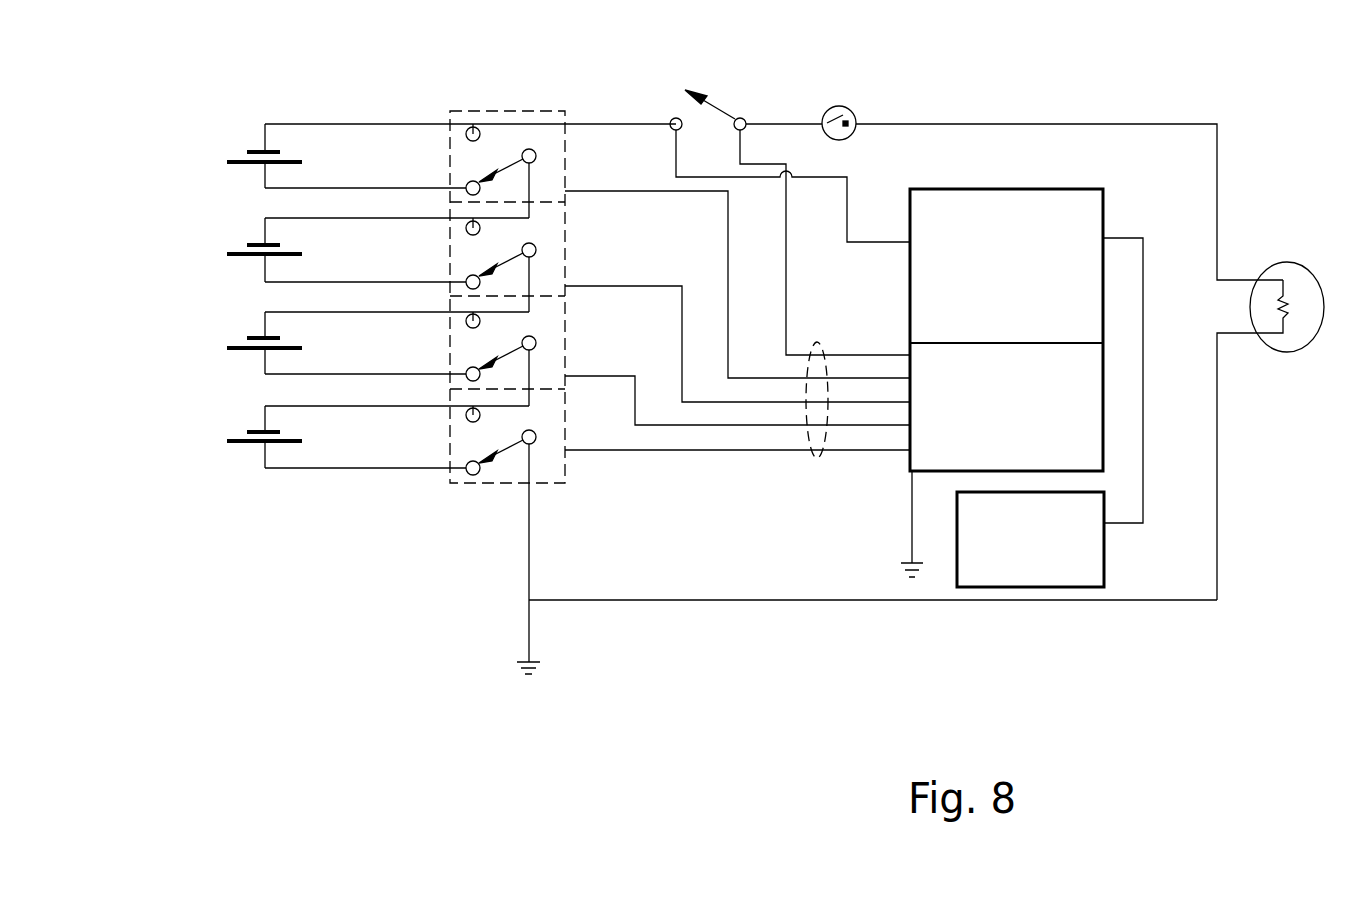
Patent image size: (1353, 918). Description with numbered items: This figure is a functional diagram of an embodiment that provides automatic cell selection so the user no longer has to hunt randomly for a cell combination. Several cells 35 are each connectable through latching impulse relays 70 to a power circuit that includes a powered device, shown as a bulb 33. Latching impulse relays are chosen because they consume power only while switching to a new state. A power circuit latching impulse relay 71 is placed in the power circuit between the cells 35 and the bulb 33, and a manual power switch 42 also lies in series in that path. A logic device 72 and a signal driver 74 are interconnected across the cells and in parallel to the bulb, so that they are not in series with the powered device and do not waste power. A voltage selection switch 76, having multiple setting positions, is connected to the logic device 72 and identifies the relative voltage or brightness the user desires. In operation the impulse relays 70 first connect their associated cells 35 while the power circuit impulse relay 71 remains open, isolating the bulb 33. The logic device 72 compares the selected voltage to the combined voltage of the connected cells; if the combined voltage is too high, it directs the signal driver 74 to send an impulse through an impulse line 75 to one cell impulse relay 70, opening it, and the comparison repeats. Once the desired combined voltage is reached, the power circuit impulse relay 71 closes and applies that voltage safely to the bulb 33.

The bulb 33 is at (1284, 262).
The cells 35 is at (227, 440).
The manual power switch 42 is at (839, 106).
The latching impulse relays 70 is at (512, 108).
The power circuit latching impulse relay 71 is at (741, 117).
The logic device 72 is at (1091, 229).
The signal driver 74 is at (1091, 379).
The impulse line 75 is at (817, 342).
The voltage selection switch 76 is at (1098, 586).